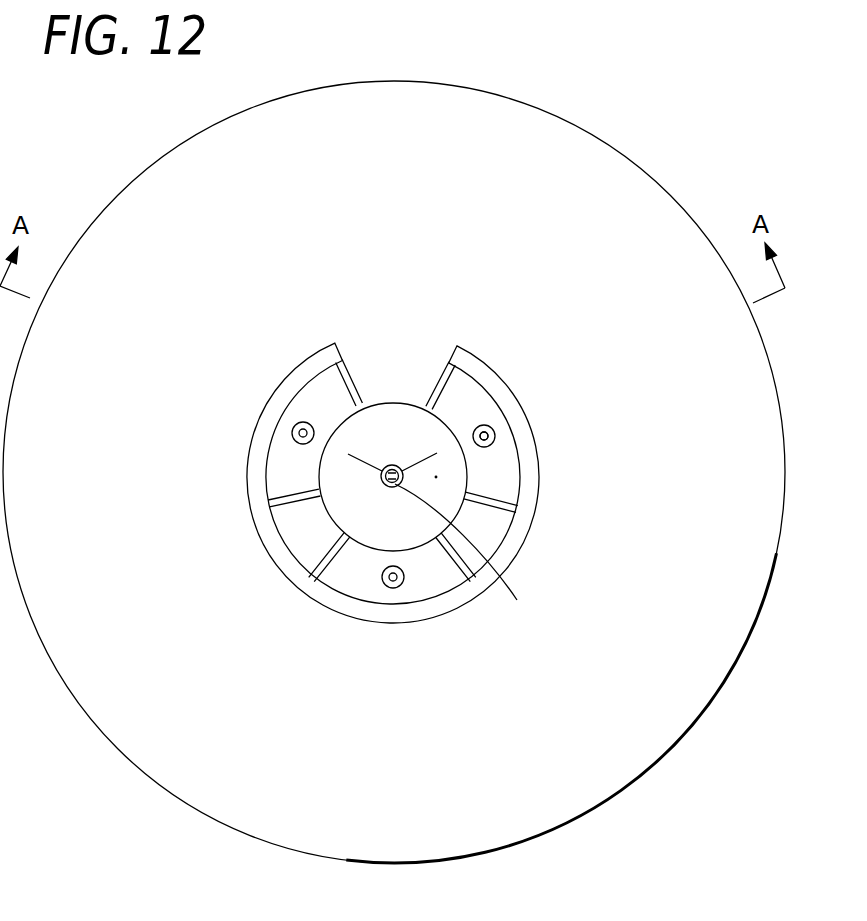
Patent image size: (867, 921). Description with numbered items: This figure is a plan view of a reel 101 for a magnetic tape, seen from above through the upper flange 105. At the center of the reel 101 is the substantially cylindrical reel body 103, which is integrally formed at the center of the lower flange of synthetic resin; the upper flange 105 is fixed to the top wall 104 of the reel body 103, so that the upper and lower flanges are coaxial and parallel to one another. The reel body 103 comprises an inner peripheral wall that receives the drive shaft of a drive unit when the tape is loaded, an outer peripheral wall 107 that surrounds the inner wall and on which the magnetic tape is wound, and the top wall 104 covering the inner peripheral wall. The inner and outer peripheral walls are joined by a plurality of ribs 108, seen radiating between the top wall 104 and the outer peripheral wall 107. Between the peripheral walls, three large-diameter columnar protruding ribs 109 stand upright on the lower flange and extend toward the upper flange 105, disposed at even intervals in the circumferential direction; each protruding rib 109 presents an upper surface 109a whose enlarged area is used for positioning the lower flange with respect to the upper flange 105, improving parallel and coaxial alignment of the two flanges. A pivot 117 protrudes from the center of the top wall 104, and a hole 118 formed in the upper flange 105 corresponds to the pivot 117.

The reel 101 is at (598, 142).
The reel body 103 is at (447, 611).
The top wall 104 is at (457, 478).
The upper flange 105 is at (148, 748).
The outer peripheral wall 107 is at (257, 462).
The ribs 108 is at (450, 385).
The protruding ribs 109 is at (297, 425).
The upper surface 109a is at (495, 437).
The pivot 117 is at (391, 466).
The hole 118 is at (471, 558).